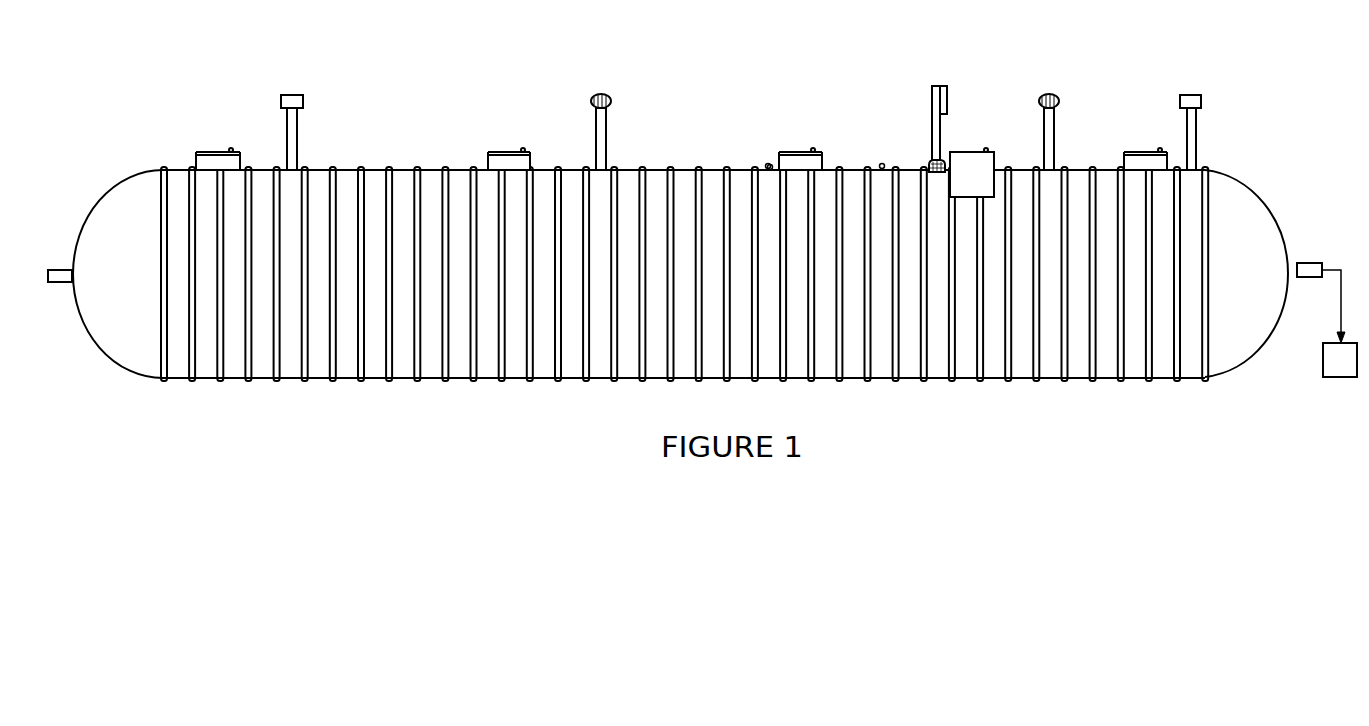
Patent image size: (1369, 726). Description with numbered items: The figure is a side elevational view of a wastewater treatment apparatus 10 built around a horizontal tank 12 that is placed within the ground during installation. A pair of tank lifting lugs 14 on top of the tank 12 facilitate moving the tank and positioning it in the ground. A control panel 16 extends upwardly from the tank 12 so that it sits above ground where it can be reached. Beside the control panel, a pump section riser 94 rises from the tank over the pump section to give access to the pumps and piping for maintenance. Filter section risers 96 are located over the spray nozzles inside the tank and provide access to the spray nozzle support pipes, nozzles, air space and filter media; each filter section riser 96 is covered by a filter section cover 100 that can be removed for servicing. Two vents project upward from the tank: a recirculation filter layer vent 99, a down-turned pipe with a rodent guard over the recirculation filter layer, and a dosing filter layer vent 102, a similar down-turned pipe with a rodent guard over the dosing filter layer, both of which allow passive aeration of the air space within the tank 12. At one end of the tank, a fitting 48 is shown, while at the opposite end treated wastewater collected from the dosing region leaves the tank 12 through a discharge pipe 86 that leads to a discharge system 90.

The wastewater treatment apparatus 10 is at (1253, 162).
The tank 12 is at (1273, 205).
The tank lifting lugs 14 is at (766, 165).
The control panel 16 is at (945, 86).
The outlet fitting 48 is at (59, 270).
The discharge pipe 86 is at (1304, 263).
The discharge system 90 is at (1323, 357).
The pump section riser 94 is at (994, 158).
The filter section risers 96 is at (196, 163).
The recirculation filter layer vent 99 is at (303, 100).
The filter section cover 100 is at (213, 151).
The dosing filter layer vent 102 is at (1053, 95).